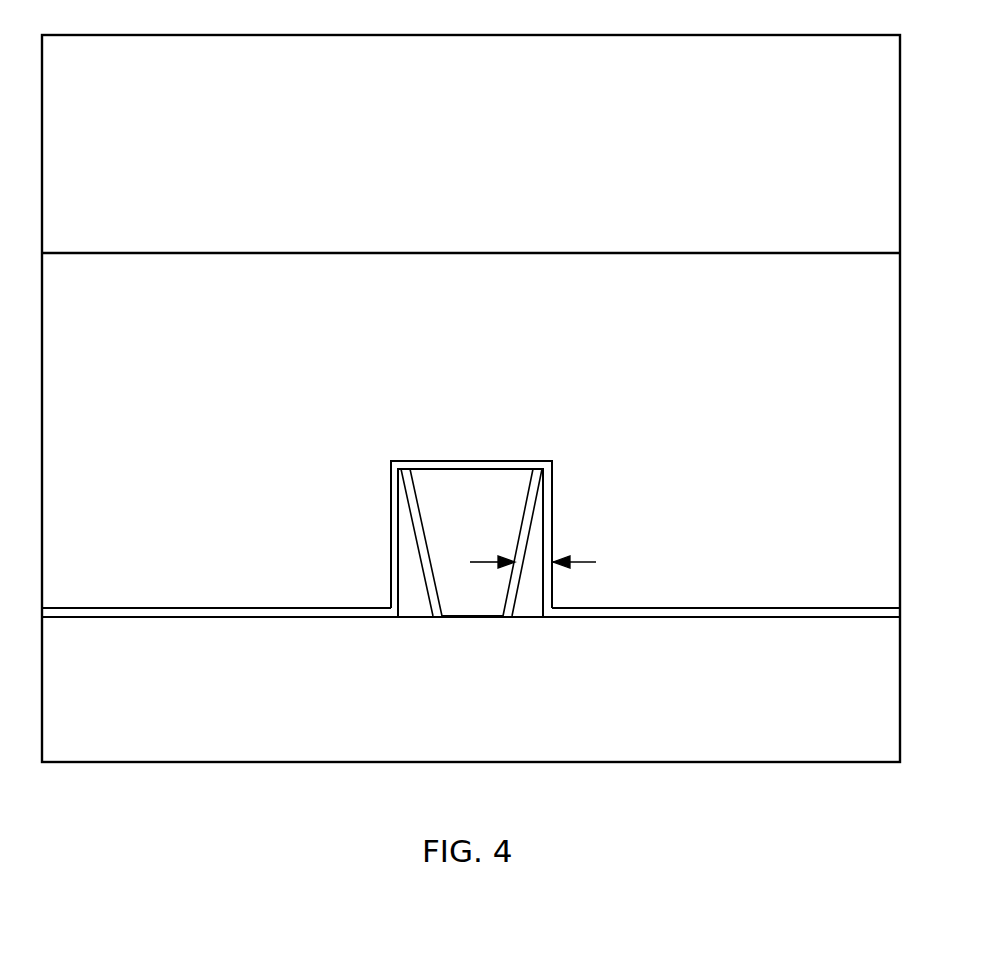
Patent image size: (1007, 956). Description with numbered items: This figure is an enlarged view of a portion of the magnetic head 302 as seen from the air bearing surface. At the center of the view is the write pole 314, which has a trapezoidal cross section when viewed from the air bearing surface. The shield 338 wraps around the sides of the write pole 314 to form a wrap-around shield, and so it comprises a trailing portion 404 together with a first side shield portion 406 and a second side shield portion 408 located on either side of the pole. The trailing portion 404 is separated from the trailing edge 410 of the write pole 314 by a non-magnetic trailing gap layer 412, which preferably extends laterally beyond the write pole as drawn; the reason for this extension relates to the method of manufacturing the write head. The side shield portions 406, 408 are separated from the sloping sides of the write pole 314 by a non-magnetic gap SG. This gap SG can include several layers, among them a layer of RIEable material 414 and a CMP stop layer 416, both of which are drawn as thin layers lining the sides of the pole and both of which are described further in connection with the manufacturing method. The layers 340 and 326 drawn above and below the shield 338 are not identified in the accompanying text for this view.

The head 302 is at (900, 102).
The top dielectric layer 340 is at (498, 129).
The shield 338 is at (492, 299).
The substrate layer 326 is at (530, 684).
The second side shield portion 408 is at (203, 498).
The first side shield portion 406 is at (808, 491).
The non-magnetic trailing gap layer 412 is at (505, 466).
The trailing edge 410 is at (457, 469).
The trailing portion 404 is at (498, 417).
The CMP stop layer 416 is at (421, 525).
The layer of RIEable material 414 is at (409, 578).
The write pole 314 is at (505, 519).
The non-magnetic gap SG is at (580, 563).